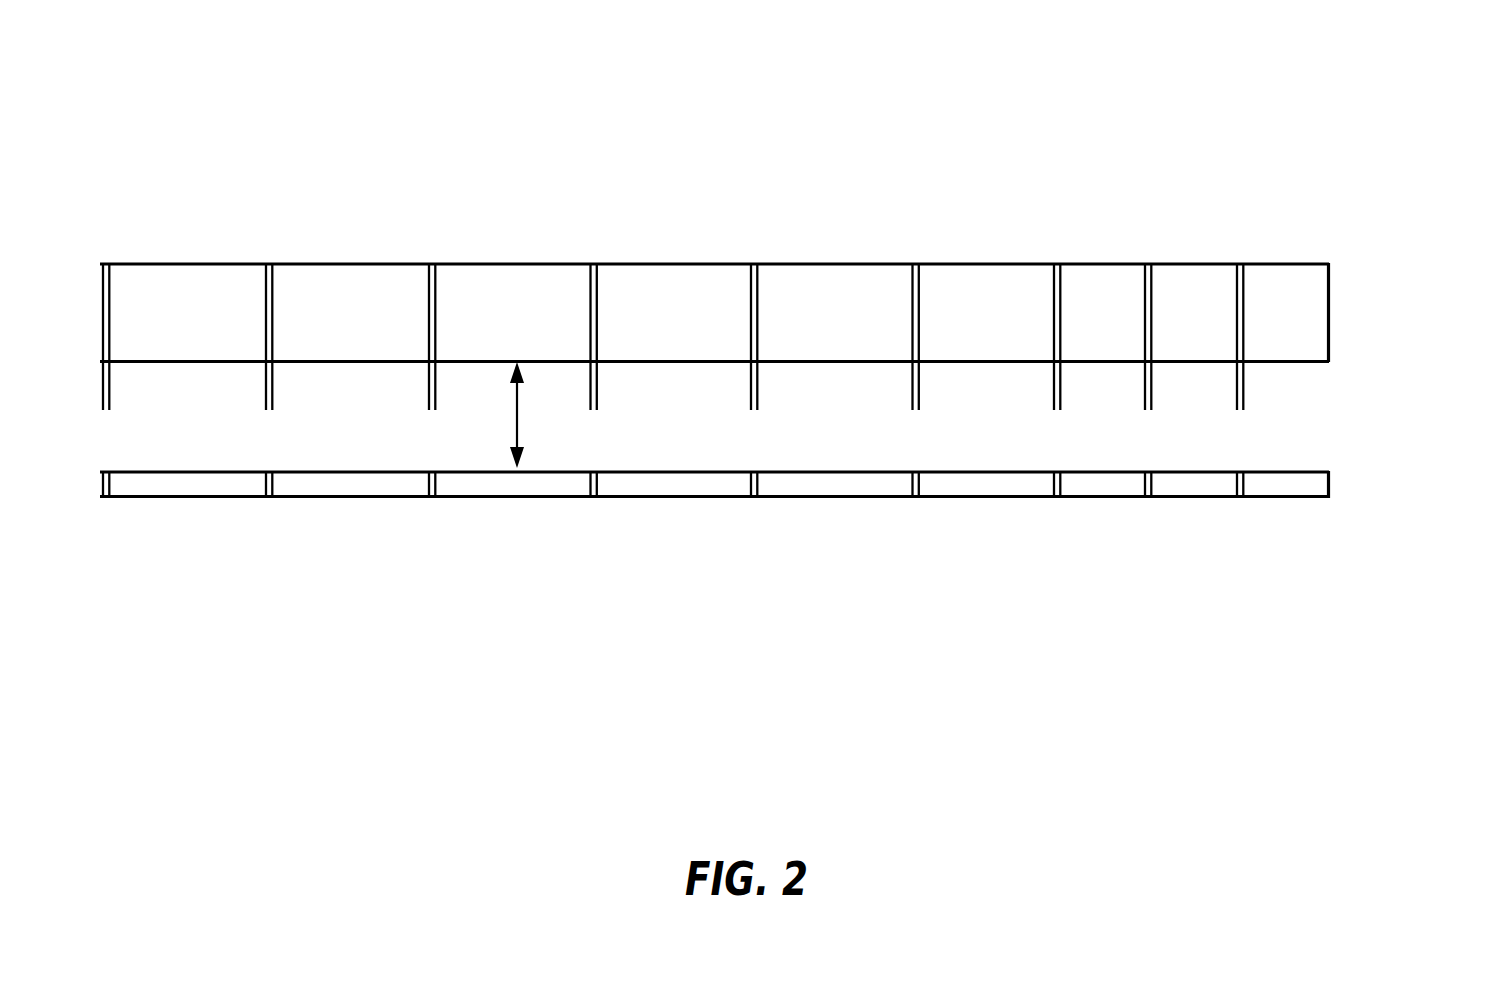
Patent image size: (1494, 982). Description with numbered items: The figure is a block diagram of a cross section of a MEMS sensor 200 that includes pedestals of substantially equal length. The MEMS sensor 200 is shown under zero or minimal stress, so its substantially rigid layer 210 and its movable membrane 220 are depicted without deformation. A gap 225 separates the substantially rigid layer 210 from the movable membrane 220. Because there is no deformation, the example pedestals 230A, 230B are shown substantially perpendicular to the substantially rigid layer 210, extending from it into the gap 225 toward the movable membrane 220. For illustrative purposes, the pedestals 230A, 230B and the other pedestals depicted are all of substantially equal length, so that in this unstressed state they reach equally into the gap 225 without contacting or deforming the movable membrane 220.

The MEMS sensor 200 is at (219, 52).
The substantially rigid layer 210 is at (658, 263).
The movable membrane 220 is at (652, 497).
The gap 225 is at (517, 422).
The pedestal 230A is at (756, 383).
The pedestal 230B is at (1242, 388).